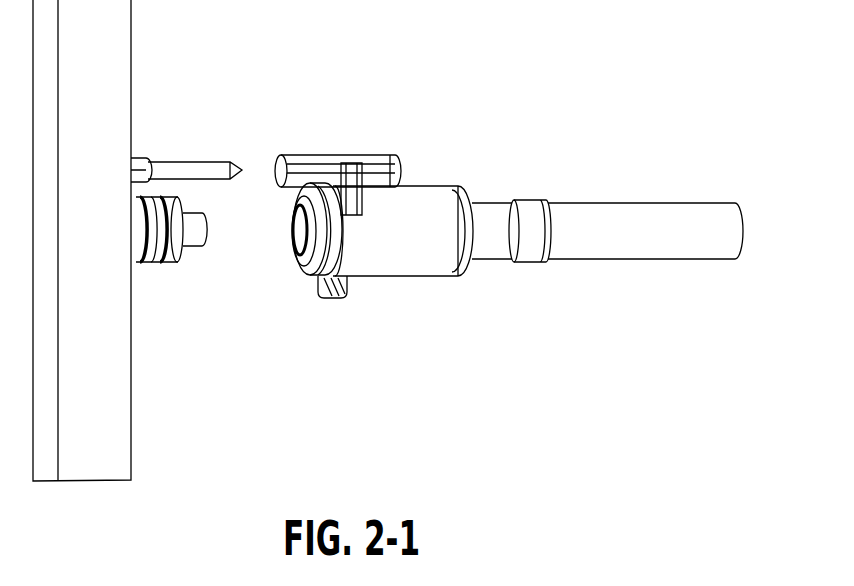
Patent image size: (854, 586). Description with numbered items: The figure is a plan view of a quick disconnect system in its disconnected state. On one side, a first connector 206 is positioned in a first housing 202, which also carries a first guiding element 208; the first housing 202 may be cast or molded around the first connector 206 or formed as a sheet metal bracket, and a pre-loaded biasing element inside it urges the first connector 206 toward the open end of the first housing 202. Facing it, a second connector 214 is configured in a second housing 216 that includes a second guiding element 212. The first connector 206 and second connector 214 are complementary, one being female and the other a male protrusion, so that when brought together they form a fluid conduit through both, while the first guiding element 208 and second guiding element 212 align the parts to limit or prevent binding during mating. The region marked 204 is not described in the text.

The first housing 202 is at (438, 186).
The outer surface of body 204 is at (410, 283).
The first connector 206 is at (295, 253).
The first guiding element 208 is at (312, 155).
The second guiding element 212 is at (193, 160).
The second connector 214 is at (208, 230).
The second housing 216 is at (156, 265).